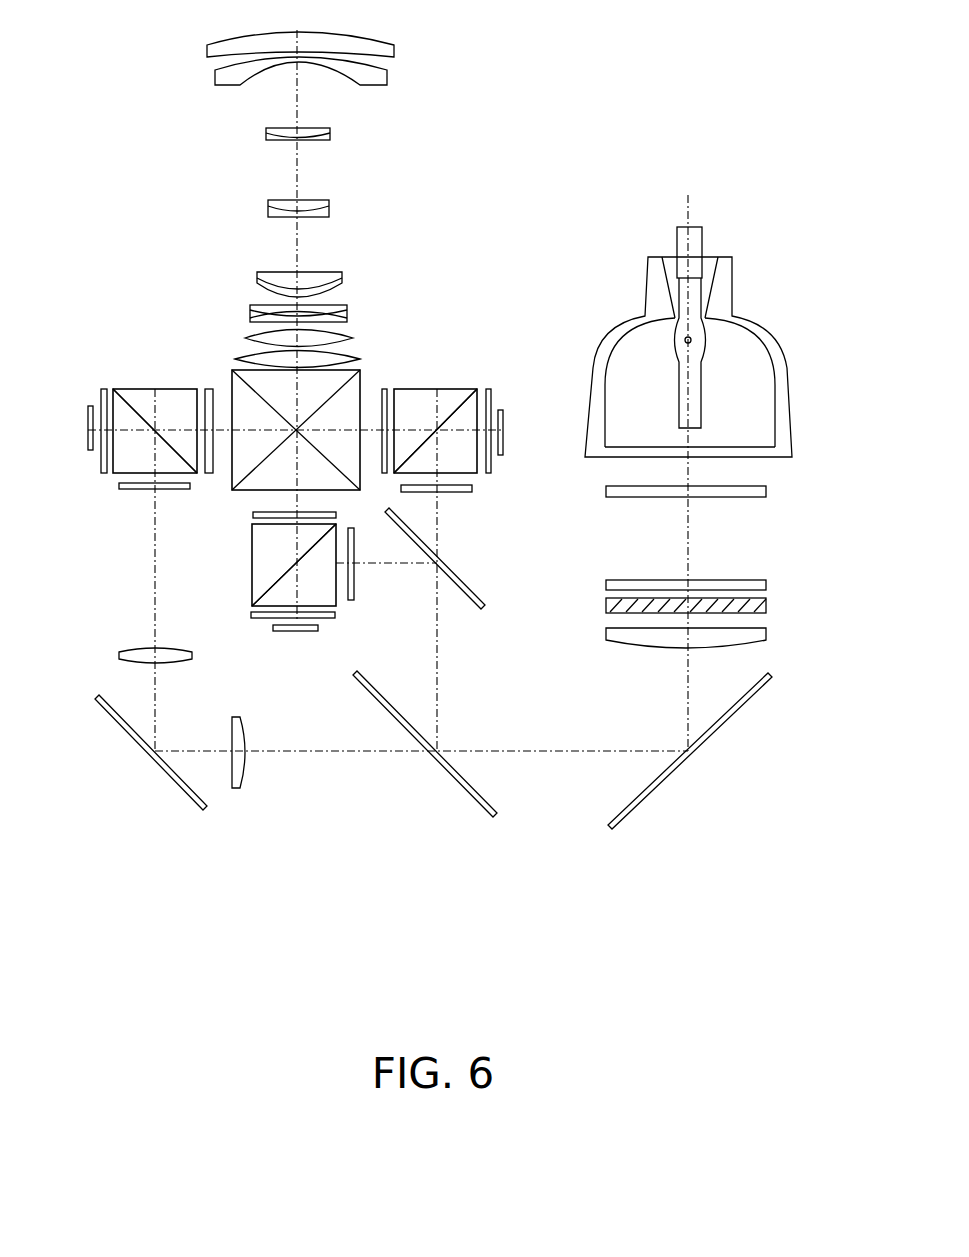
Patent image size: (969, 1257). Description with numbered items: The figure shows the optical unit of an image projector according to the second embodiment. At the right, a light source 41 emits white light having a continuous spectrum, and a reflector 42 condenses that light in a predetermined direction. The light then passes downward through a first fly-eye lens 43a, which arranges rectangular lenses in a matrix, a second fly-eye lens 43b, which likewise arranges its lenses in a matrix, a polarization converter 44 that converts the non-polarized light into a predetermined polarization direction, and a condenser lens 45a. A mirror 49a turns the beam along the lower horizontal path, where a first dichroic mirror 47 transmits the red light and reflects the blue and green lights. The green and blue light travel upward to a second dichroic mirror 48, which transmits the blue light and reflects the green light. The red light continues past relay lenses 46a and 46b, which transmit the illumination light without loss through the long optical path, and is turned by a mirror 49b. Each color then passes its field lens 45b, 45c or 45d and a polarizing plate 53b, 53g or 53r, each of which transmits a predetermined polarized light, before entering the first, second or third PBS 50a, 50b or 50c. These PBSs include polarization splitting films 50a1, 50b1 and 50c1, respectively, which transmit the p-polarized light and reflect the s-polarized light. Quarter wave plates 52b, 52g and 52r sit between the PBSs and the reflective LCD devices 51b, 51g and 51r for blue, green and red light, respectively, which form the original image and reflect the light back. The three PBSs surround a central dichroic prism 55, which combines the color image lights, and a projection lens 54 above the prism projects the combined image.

The light source 41 is at (691, 340).
The reflector 42 is at (783, 423).
The first fly-eye lens 43a is at (766, 491).
The second fly-eye lens 43b is at (766, 585).
The polarization converter 44 is at (766, 606).
The condenser lens 45a is at (766, 635).
The field lens 45b is at (472, 488).
The field lens 45c is at (354, 590).
The field lens 45d is at (120, 486).
The relay lens 46a is at (240, 790).
The relay lens 46b is at (119, 655).
The first dichroic mirror 47 is at (465, 787).
The second dichroic mirror 48 is at (480, 606).
The mirror 49a is at (650, 795).
The mirror 49b is at (165, 775).
The first PBS 50a is at (465, 390).
The polarization splitting film 50a1 is at (442, 415).
The second PBS 50b is at (255, 583).
The polarization splitting film 50b1 is at (280, 575).
The third PBS 50c is at (133, 395).
The polarization splitting film 50c1 is at (143, 418).
The reflective LCD device for blue light 51b is at (503, 430).
The reflective LCD device for green light 51g is at (275, 632).
The reflective LCD device for red light 51r is at (88, 428).
The quarter wave plate for blue light 52b is at (490, 390).
The quarter wave plate for green light 52g is at (332, 619).
The quarter wave plate for red light 52r is at (104, 389).
The polarizing plate 53b is at (384, 389).
The polarizing plate 53g is at (253, 514).
The polarizing plate 53r is at (209, 389).
The projection lens 54 is at (387, 367).
The dichroic prism 55 is at (360, 477).